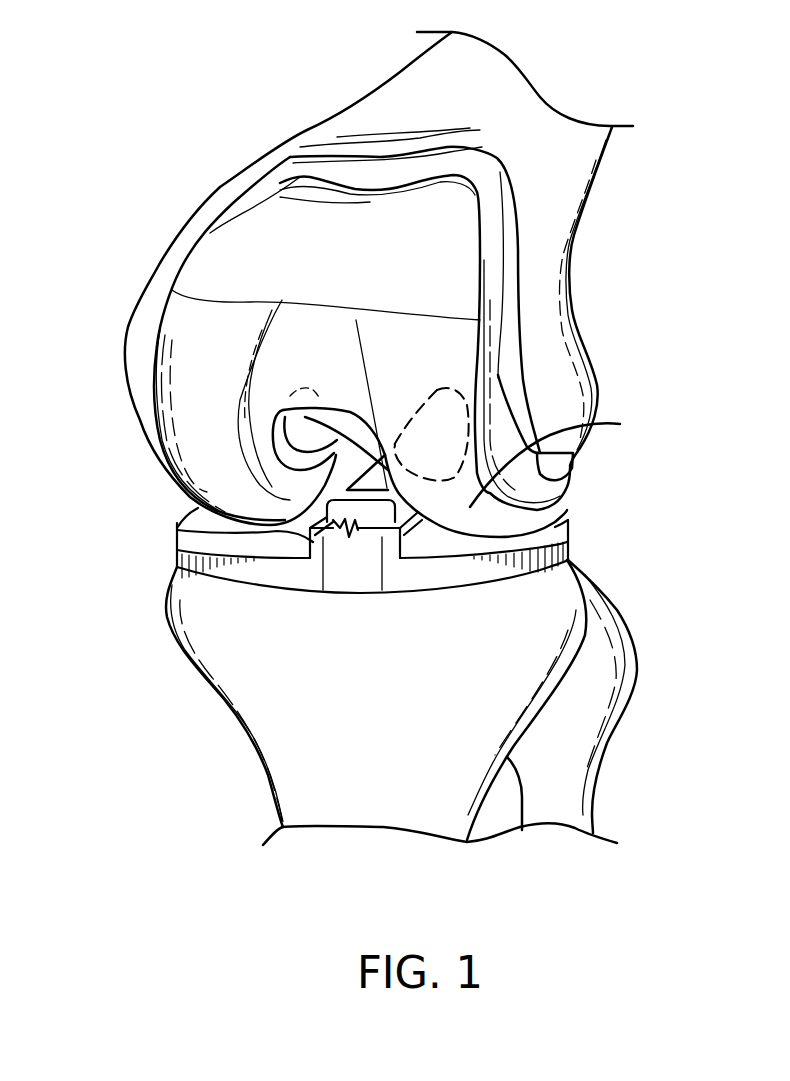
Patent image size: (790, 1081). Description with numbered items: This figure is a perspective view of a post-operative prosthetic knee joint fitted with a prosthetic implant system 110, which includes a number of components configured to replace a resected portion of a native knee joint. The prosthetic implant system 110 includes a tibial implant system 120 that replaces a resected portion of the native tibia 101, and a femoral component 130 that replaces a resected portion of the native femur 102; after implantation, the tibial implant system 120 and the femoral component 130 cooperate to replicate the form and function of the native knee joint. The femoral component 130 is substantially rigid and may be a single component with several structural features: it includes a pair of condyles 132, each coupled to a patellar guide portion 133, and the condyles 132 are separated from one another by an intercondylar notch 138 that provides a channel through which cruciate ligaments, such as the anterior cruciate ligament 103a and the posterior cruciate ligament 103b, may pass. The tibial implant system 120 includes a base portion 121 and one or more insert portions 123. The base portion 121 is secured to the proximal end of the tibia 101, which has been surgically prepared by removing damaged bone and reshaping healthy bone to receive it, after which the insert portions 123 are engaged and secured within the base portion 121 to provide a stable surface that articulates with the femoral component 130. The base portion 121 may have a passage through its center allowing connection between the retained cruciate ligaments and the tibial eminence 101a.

The prosthetic implant system 110 is at (148, 33).
The native femur 102 is at (368, 108).
The femoral component 130 is at (290, 163).
The patellar guide portion 133 is at (327, 320).
The posterior cruciate ligament (PCL) 103b is at (300, 430).
The intercondylar notch 138 is at (358, 425).
The anterior cruciate ligament (ACL) 103a is at (380, 467).
The condyles 132 is at (620, 424).
The tibial implant system 120 is at (162, 566).
The insert portions 123 is at (567, 533).
The base portion 121 is at (480, 585).
The tibial eminence 101a is at (382, 520).
The native tibia 101 is at (180, 620).